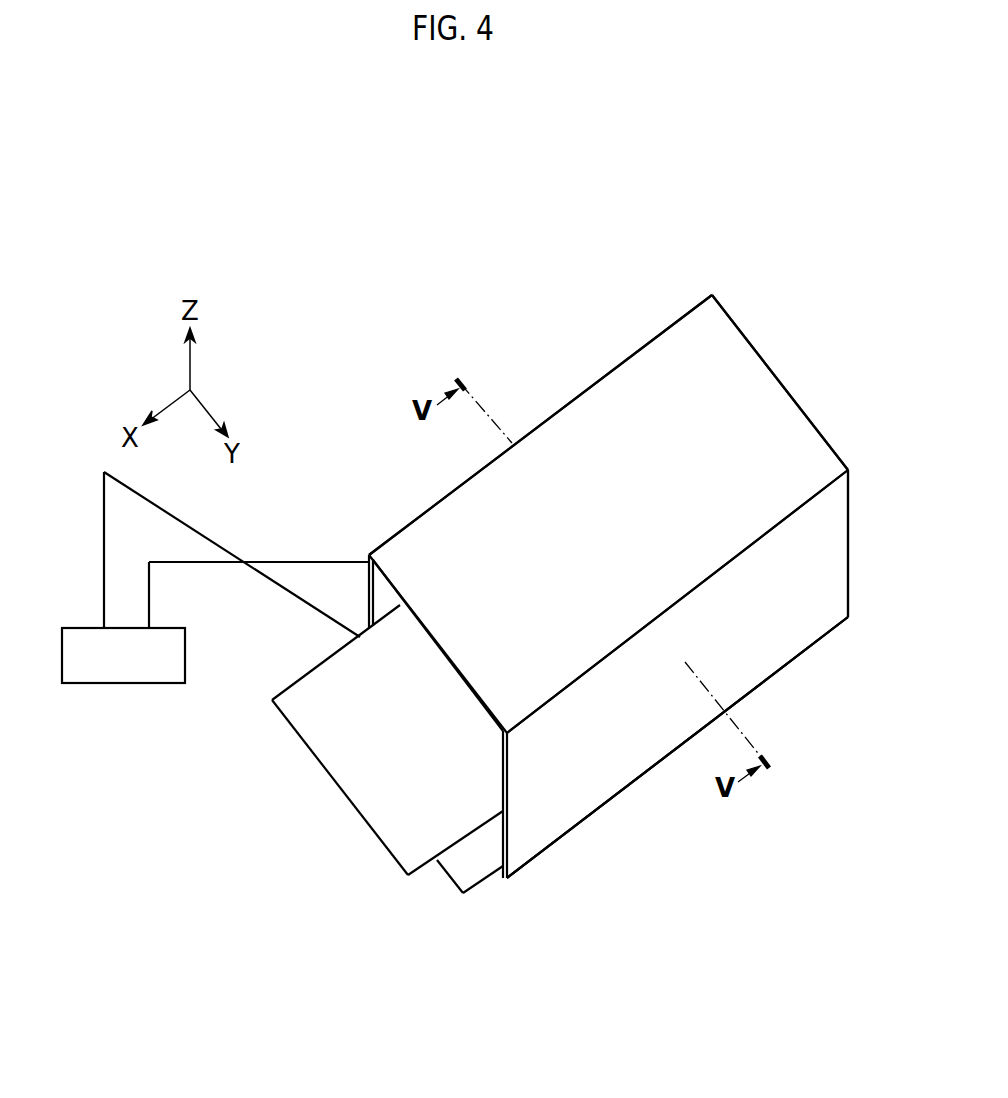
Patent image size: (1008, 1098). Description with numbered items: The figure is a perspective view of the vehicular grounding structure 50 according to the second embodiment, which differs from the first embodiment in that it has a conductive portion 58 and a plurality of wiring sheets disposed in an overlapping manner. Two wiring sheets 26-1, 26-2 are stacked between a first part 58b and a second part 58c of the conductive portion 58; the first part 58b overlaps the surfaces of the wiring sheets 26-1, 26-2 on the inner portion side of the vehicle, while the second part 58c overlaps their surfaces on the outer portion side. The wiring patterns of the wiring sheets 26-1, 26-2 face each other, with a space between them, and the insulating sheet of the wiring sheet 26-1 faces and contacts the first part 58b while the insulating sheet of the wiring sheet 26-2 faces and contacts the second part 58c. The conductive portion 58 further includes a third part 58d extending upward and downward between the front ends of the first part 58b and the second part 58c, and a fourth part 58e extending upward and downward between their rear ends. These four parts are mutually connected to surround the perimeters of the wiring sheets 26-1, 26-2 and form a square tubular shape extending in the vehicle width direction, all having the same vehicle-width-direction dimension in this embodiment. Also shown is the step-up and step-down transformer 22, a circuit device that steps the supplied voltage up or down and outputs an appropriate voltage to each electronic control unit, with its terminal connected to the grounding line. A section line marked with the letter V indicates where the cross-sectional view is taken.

The step-up and step-down transformer 22 is at (123, 665).
The wiring sheet 26-1 is at (325, 782).
The wiring sheet 26-2 is at (447, 880).
The grounding structure 50 is at (619, 886).
The conductive portion 58 is at (420, 550).
The first part 58b is at (586, 428).
The second part 58c is at (770, 642).
The third part 58d is at (665, 362).
The fourth part 58e is at (773, 607).